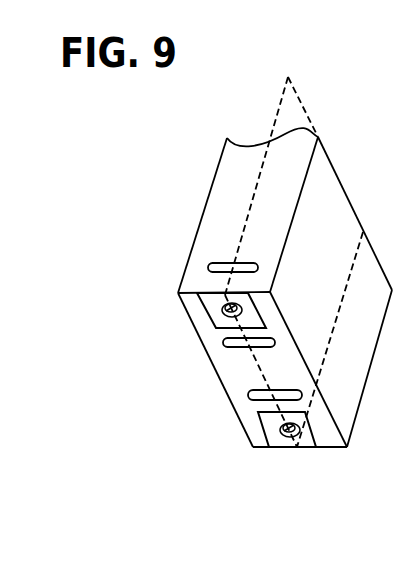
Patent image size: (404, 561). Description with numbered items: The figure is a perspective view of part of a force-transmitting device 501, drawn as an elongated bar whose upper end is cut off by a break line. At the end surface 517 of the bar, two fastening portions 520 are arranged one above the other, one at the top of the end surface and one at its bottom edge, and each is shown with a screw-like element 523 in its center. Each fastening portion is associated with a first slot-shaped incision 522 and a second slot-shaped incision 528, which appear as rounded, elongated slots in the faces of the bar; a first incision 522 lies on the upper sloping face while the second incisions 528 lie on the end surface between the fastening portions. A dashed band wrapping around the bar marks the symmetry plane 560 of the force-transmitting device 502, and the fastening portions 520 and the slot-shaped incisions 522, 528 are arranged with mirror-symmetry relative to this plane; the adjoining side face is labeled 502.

The force-transmitting device 501 is at (321, 126).
The force-transmitting device 502 is at (347, 287).
The end surface 517 is at (240, 373).
The fastening portion 520 is at (203, 307).
The first slot-shaped incision 522 is at (215, 268).
The screw 523 is at (227, 326).
The second slot-shaped incision 528 is at (230, 343).
The symmetry plane 560 is at (287, 117).